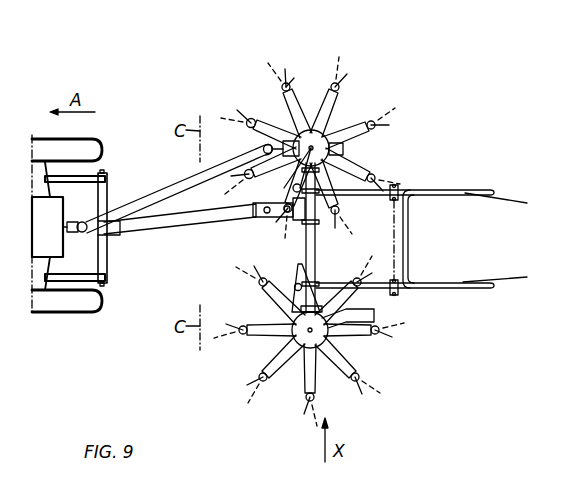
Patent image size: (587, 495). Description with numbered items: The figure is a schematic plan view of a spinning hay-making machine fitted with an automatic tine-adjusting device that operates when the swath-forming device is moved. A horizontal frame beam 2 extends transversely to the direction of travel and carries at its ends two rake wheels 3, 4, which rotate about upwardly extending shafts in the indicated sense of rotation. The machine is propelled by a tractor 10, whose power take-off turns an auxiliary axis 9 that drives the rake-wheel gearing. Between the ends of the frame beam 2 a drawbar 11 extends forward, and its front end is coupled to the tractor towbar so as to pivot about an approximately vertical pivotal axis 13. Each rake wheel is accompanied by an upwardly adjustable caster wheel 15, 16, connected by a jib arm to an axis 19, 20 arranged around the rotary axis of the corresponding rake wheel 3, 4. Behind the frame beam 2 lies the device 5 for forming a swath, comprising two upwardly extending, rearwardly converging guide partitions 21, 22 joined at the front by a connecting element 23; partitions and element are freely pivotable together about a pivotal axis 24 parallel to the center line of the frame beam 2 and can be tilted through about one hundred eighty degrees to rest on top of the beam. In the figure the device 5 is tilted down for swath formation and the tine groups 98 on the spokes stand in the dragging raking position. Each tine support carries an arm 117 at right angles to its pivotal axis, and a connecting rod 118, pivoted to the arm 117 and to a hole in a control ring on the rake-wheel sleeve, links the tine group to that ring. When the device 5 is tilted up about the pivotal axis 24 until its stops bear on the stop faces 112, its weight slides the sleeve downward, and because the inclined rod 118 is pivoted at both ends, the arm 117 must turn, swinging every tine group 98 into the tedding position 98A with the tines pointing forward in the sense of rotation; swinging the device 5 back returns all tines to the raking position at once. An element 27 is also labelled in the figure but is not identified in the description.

The frame beam 2 is at (298, 240).
The rake wheel 3 is at (373, 118).
The rake wheel 4 is at (252, 284).
The swath-forming device 5 is at (470, 188).
The auxiliary axis 9 is at (160, 188).
The tractor 10 is at (99, 136).
The drawbar 11 is at (151, 226).
The pivotal axis 13 is at (85, 234).
The caster wheel 15 is at (365, 168).
The caster wheel 16 is at (378, 309).
The axis 19 is at (263, 171).
The axis 20 is at (293, 385).
The guide partition 21 is at (505, 202).
The guide partition 22 is at (496, 279).
The connecting element 23 is at (410, 230).
The pivotal axis 24 is at (399, 168).
The rake arm 27 is at (262, 129).
The tines 98 is at (283, 70).
The tedding position 98A is at (275, 79).
The stop faces 112 is at (285, 279).
The arm 117 is at (294, 78).
The connecting rod 118 is at (348, 100).